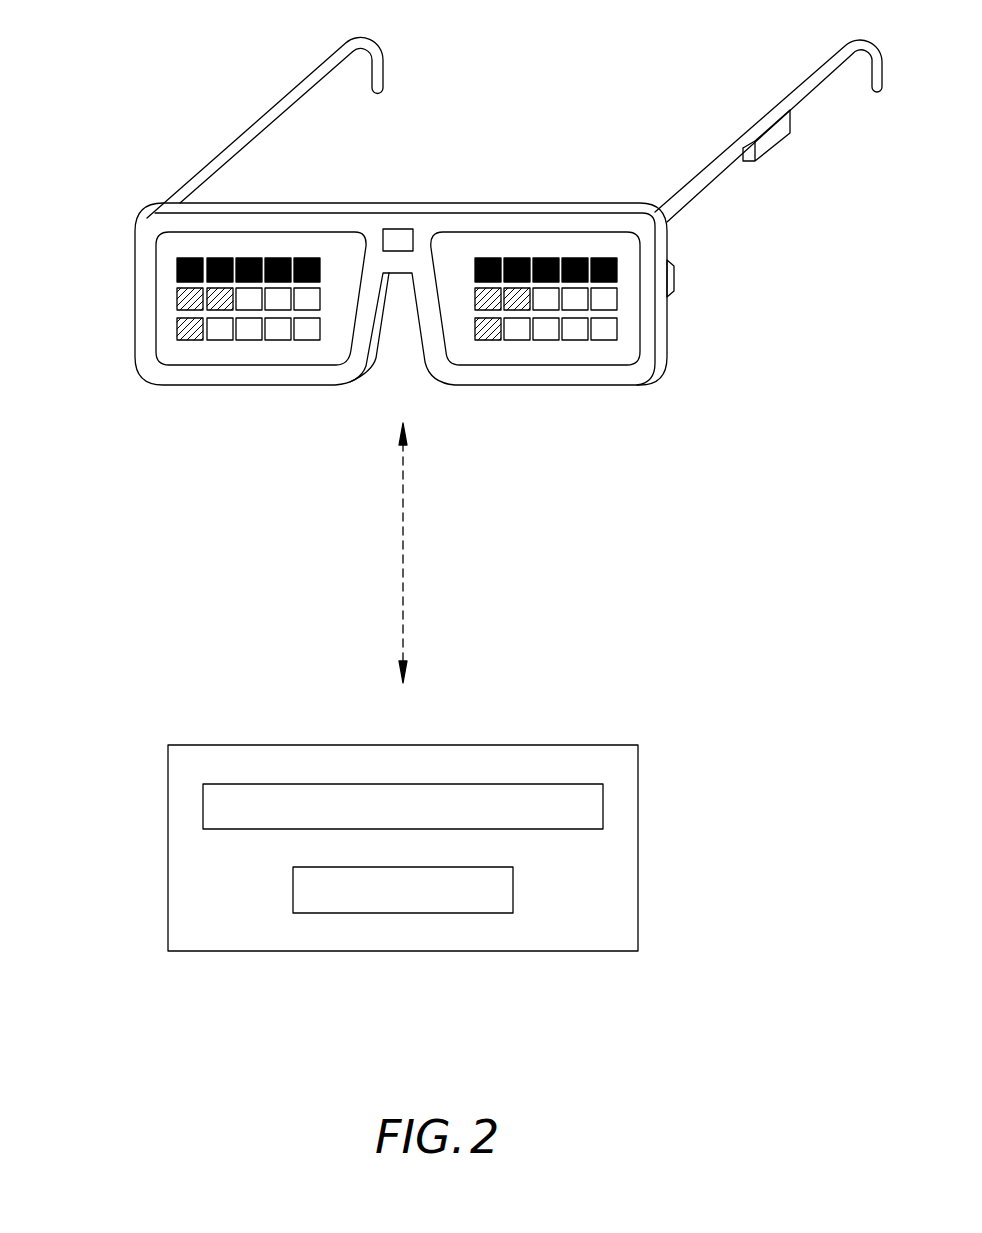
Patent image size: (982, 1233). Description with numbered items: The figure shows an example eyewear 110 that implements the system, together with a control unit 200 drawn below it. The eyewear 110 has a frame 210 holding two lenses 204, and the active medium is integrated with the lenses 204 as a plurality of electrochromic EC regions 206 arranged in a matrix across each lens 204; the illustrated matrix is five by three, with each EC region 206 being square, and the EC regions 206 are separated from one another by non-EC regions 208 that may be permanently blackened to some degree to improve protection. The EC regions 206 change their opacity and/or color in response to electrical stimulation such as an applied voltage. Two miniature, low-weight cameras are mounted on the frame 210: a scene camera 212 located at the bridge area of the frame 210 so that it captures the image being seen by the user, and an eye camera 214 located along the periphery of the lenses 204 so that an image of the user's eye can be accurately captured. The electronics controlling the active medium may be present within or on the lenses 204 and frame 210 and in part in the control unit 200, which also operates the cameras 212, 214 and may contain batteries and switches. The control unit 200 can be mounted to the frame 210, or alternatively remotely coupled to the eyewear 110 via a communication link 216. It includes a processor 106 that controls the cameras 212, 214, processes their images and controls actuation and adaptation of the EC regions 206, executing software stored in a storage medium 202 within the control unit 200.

The eyewear 110 is at (186, 84).
The control unit 200 is at (790, 115).
The storage medium 202 is at (513, 890).
The processor 106 is at (603, 803).
The lenses 204 is at (398, 326).
The EC regions 206 is at (303, 257).
The non-EC regions 208 is at (263, 262).
The frame 210 is at (540, 385).
The scene camera 212 is at (393, 228).
The eye camera 214 is at (676, 277).
The communication link 216 is at (403, 553).